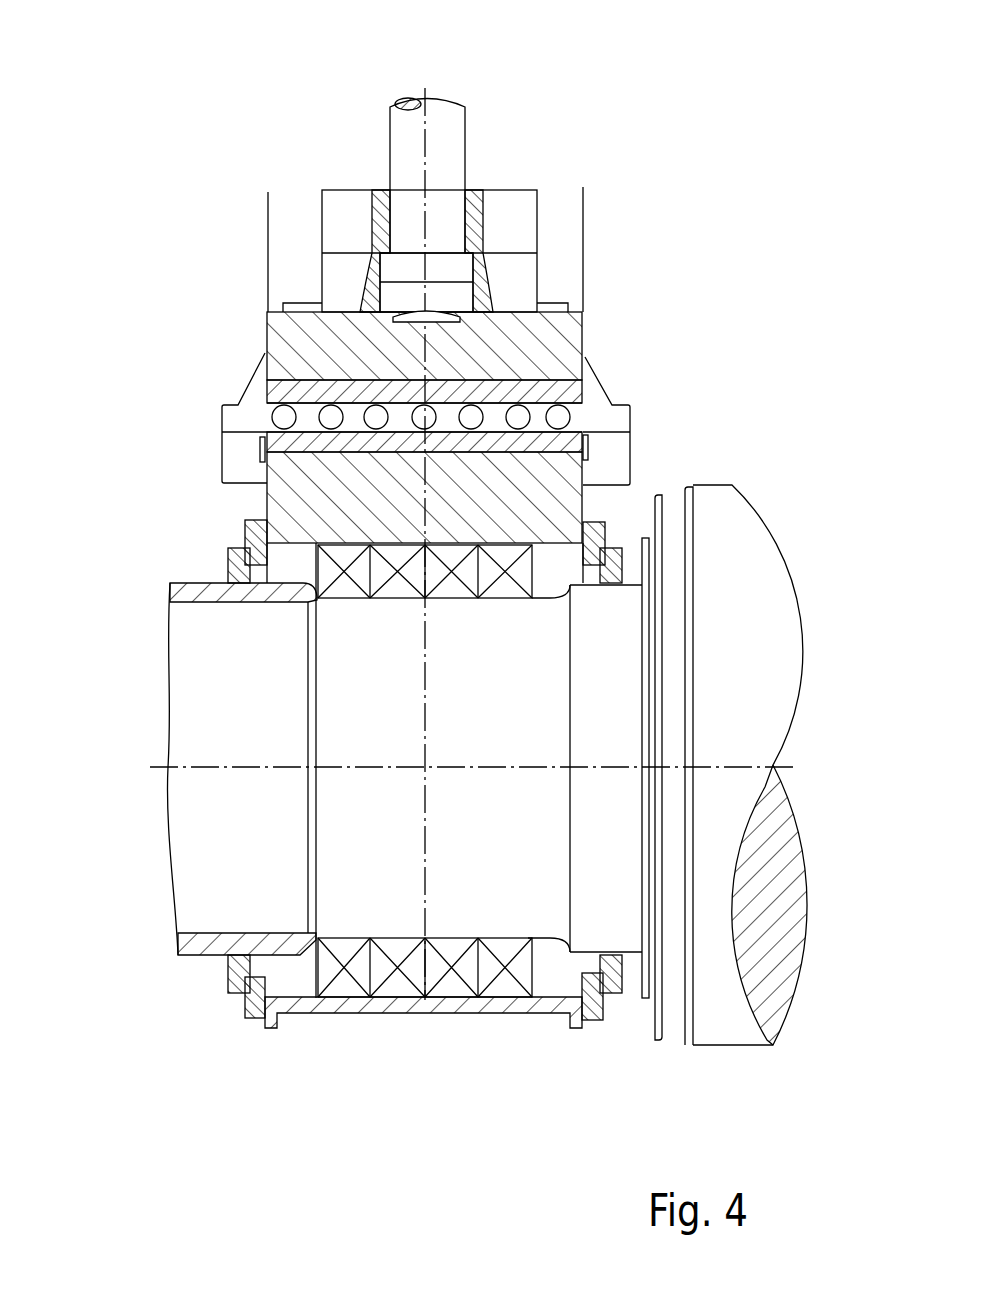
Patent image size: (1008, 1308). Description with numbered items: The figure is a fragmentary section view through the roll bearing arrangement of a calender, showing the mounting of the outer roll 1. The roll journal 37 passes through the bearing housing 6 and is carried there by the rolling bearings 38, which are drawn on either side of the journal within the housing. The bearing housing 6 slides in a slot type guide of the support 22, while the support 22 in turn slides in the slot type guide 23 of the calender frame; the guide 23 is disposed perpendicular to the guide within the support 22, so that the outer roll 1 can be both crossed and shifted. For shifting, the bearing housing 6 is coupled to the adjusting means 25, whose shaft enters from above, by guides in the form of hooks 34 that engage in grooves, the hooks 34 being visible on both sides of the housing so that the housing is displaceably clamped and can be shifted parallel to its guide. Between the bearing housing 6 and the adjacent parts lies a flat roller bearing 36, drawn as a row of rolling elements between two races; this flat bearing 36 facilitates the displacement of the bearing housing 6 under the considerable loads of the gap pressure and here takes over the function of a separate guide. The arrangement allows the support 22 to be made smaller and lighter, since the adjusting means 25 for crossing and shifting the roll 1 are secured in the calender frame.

The outer roll 1 is at (765, 577).
The bearing housing 6 is at (300, 495).
The support 22 is at (300, 325).
The slot type guide 23 is at (290, 247).
The adjusting means 25 is at (450, 175).
The hook 34 is at (228, 457).
The flat roller bearing 36 is at (355, 418).
The roll journal 37 is at (528, 875).
The rolling bearing 38 is at (455, 985).